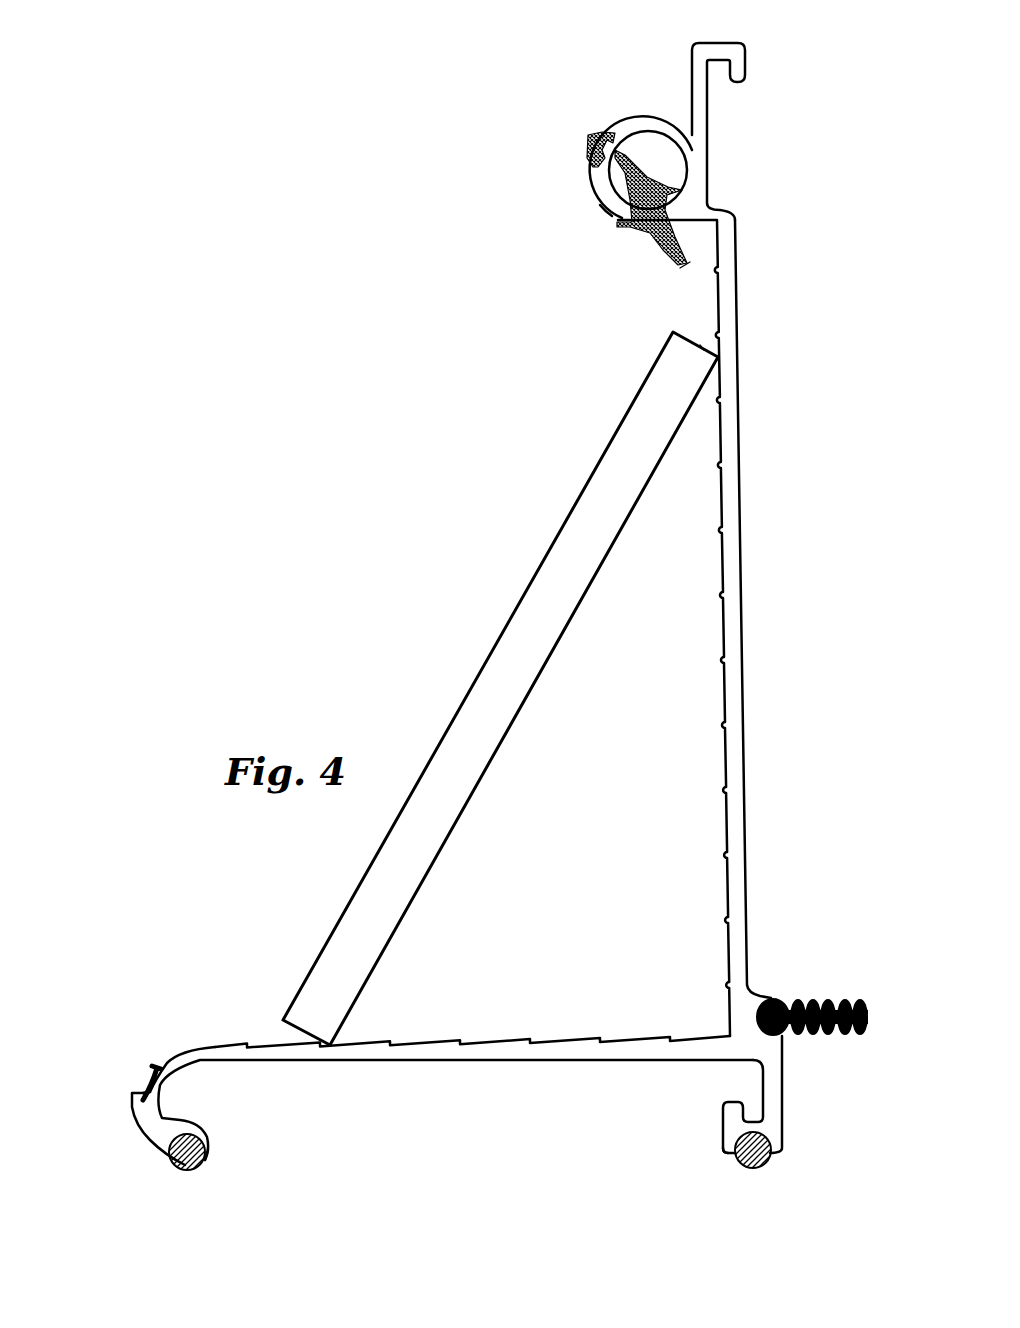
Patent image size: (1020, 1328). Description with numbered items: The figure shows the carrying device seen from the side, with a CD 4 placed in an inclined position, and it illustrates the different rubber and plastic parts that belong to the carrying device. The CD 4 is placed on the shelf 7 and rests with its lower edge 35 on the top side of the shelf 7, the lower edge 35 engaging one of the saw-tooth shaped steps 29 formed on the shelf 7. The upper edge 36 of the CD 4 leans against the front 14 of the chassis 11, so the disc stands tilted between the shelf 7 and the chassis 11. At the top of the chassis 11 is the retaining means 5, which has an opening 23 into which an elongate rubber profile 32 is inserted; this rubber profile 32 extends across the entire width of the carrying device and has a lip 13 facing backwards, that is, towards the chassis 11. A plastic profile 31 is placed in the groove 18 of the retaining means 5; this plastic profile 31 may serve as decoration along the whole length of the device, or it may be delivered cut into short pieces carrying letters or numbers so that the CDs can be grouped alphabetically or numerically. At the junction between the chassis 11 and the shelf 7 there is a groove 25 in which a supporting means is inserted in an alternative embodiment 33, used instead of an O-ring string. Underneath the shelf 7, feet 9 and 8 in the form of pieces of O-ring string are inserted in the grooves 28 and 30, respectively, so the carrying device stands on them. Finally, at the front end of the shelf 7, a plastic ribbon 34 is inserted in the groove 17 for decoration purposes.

The CD 4 is at (540, 608).
The retaining means 5 is at (519, 94).
The shelf 7 is at (452, 1052).
The foot 8 is at (185, 1168).
The foot 9 is at (760, 1165).
The chassis 11 is at (733, 493).
The lip 13 is at (687, 268).
The front 14 is at (713, 444).
The groove 17 is at (148, 1050).
The groove 18 is at (604, 107).
The opening 23 is at (598, 242).
The groove 25 is at (791, 978).
The groove 28 is at (731, 1168).
The saw-tooth shaped steps 29 is at (351, 1026).
The groove 30 is at (219, 1171).
The plastic profile 31 is at (588, 143).
The rubber profile 32 is at (653, 250).
The alternative embodiment of supporting means 33 is at (835, 1052).
The plastic ribbon 34 is at (150, 1068).
The lower edge 35 is at (290, 1030).
The upper edge 36 is at (693, 340).